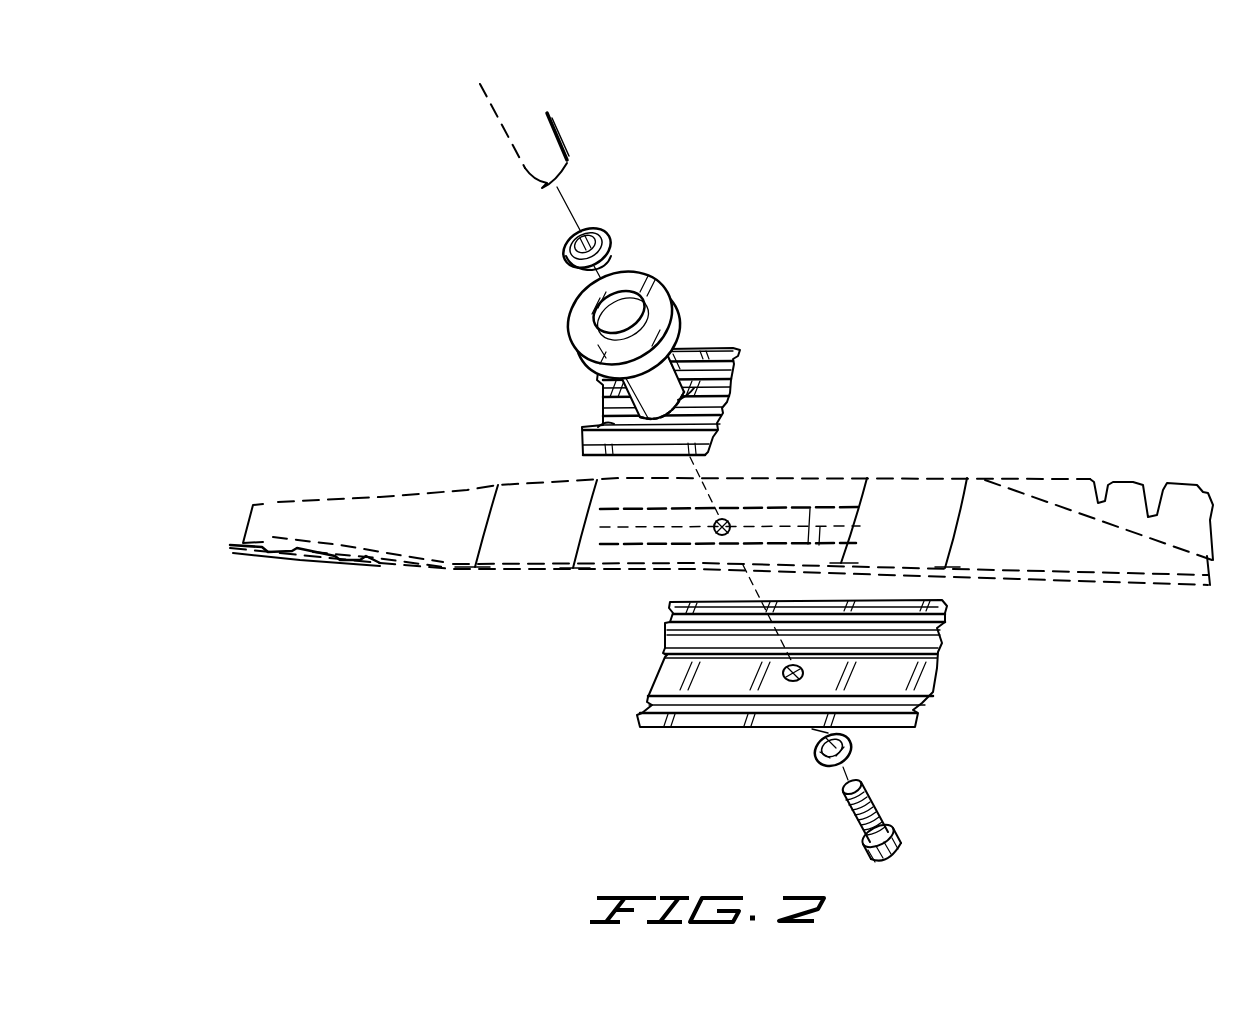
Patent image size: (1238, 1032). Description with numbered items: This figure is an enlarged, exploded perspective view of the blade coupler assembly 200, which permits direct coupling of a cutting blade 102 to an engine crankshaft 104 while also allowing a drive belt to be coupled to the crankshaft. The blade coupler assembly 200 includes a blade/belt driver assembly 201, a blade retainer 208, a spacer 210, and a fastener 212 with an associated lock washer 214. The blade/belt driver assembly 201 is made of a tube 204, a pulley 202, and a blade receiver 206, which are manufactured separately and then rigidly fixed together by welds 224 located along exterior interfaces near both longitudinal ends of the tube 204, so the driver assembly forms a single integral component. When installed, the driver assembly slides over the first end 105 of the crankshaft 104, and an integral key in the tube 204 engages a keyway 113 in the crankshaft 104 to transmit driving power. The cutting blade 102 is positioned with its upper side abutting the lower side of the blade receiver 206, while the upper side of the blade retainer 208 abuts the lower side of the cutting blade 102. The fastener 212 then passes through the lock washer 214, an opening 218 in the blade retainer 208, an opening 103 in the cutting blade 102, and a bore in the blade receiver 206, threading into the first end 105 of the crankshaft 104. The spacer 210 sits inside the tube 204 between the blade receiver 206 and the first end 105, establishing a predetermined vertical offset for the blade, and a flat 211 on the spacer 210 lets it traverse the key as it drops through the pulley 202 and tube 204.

The cutting blade 102 is at (1128, 478).
The opening 103 is at (735, 518).
The engine crankshaft 104 is at (538, 89).
The first end 105 is at (538, 190).
The keyway 113 is at (566, 138).
The blade coupler assembly 200 is at (884, 252).
The blade/belt driver assembly 201 is at (705, 347).
The pulley 202 is at (568, 321).
The tube 204 is at (600, 398).
The blade receiver 206 is at (730, 401).
The blade retainer 208 is at (936, 680).
The spacer 210 is at (602, 245).
The flat 211 is at (570, 284).
The fastener 212 is at (883, 812).
The lock washer 214 is at (816, 758).
The opening 218 is at (796, 662).
The welds 224 is at (716, 396).